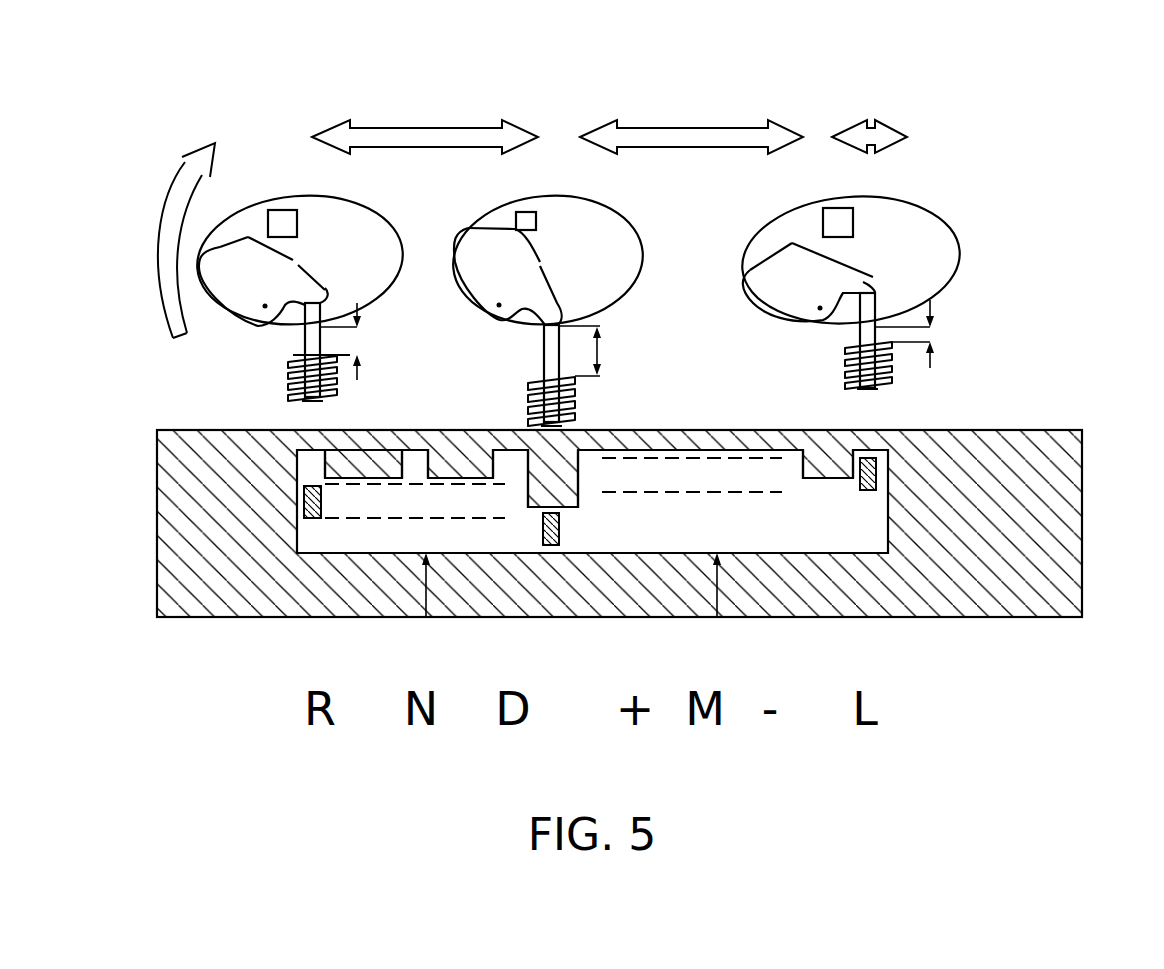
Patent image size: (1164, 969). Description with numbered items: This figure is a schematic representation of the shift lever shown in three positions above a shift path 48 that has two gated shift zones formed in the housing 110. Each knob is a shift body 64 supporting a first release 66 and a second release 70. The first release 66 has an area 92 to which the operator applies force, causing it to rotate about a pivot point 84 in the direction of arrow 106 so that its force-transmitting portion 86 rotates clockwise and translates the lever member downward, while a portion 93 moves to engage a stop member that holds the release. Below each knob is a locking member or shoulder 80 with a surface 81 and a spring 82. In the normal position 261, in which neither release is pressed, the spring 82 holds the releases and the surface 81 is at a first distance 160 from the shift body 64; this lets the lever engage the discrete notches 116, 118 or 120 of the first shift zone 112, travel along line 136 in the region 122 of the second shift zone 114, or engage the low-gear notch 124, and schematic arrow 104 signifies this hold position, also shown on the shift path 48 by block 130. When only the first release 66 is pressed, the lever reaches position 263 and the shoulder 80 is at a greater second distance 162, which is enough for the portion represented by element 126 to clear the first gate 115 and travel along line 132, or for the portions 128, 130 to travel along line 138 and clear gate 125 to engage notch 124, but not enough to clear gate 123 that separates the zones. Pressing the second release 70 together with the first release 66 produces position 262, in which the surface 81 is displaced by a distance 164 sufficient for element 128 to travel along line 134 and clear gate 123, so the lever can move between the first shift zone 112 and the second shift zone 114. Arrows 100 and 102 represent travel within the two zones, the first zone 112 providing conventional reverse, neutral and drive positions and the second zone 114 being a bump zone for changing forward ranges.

The shift path 48 is at (896, 502).
The shift body 64 is at (345, 203).
The first release 66 is at (300, 263).
The second release 70 is at (288, 210).
The locking member 80 is at (337, 372).
The surface of locking member 81 is at (300, 355).
The spring 82 is at (288, 378).
The pivot point 84 is at (265, 305).
The force-transmitting portion 86 is at (328, 290).
The area of first release 92 is at (210, 252).
The portion of first release 93 is at (253, 237).
The first shift zone travel 100 is at (476, 127).
The second shift zone travel 102 is at (744, 127).
The hold position arrow 104 is at (886, 120).
The rotation arrow 106 is at (160, 222).
The shift selector housing 110 is at (1047, 520).
The first shift zone 112 is at (426, 590).
The second shift zone 114 is at (717, 590).
The first gate 115 is at (345, 455).
The notch 116 is at (305, 470).
The notch 118 is at (418, 450).
The notch 120 is at (495, 450).
The region 122 is at (700, 450).
The gate 123 is at (565, 480).
The notch 124 is at (882, 450).
The gate 125 is at (826, 455).
The portion of shift lever 126 is at (318, 520).
The portion of shift lever 128 is at (560, 527).
The portion of shift lever 130 is at (862, 493).
The line 132 is at (415, 485).
The line 134 is at (418, 518).
The line 136 is at (688, 460).
The line 138 is at (690, 492).
The first distance 160 is at (935, 330).
The second distance 162 is at (360, 340).
The third distance 164 is at (602, 345).
The normal position 261 is at (952, 153).
The intermediate position 262 is at (578, 106).
The intermediate position 263 is at (305, 106).